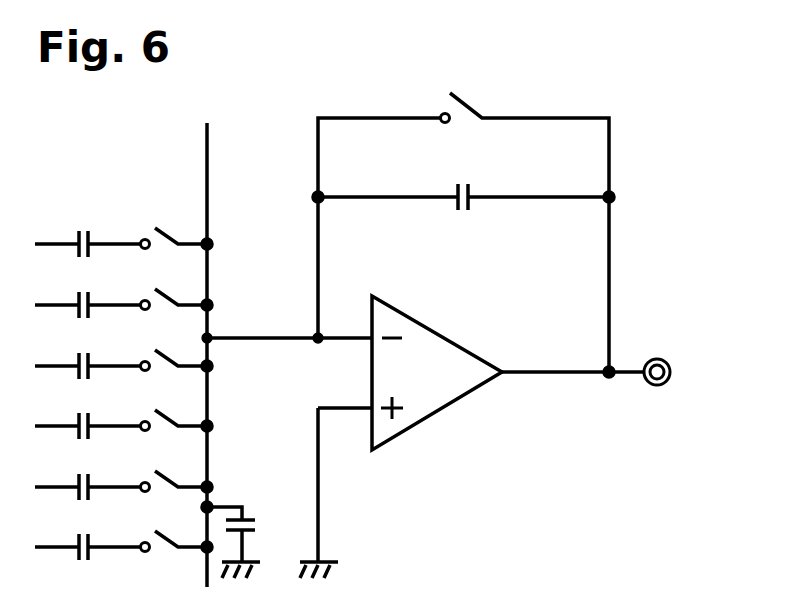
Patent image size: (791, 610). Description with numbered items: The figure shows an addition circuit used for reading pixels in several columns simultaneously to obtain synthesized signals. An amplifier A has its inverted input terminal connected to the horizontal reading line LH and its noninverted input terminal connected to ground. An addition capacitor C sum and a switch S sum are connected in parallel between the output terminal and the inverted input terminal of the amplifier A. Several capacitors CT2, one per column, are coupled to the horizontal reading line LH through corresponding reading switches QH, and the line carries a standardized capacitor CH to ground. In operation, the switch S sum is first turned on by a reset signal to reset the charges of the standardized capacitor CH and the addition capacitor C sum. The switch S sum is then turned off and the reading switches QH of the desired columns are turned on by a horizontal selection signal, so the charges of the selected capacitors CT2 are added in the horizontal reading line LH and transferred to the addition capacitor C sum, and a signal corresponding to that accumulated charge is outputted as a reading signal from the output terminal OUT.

The horizontal reading line LH is at (207, 155).
The capacitor CT2 is at (87, 374).
The reading switch QH is at (170, 354).
The standardized capacitor CH is at (250, 540).
The amplifier A is at (401, 437).
The output terminal OUT is at (617, 372).
The addition capacitor C sum is at (463, 260).
The switch S sum is at (463, 110).